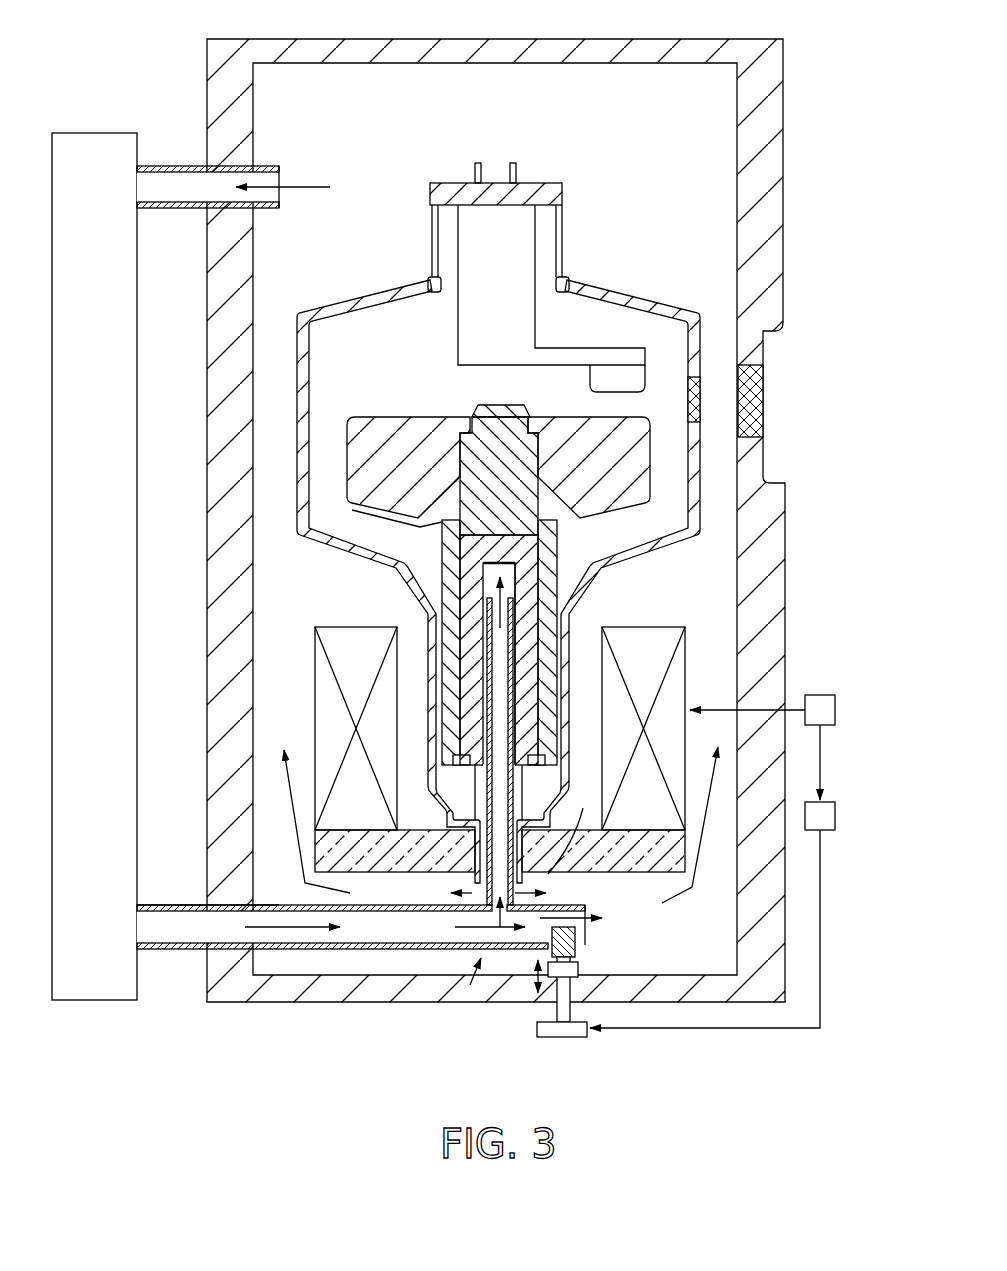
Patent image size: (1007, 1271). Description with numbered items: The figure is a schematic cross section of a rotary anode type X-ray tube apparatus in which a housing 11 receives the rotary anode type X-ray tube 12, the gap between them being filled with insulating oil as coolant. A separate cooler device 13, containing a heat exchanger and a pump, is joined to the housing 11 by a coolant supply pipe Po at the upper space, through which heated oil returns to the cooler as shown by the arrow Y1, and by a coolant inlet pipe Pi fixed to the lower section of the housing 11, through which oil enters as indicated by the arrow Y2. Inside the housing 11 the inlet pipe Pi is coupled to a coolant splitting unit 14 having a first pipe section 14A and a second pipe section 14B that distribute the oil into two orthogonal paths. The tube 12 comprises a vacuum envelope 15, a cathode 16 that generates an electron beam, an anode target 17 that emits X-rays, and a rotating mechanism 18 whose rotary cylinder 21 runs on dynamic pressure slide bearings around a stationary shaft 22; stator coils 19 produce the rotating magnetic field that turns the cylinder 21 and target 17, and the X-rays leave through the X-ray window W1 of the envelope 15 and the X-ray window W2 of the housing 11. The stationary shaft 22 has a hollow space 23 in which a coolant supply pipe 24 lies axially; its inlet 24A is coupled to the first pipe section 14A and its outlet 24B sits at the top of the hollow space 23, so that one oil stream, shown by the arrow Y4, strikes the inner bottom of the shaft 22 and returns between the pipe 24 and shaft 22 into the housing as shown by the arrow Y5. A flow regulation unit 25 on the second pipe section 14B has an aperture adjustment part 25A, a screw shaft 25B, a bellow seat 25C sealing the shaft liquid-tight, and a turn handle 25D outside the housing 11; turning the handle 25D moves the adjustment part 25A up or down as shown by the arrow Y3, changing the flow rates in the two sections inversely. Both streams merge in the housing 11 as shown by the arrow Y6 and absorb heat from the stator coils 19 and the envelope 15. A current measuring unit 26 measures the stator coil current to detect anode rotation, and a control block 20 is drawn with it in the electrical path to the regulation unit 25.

The housing 11 is at (456, 38).
The rotary anode type X-ray tube 12 is at (577, 190).
The cooler device 13 is at (92, 133).
The coolant splitting unit 14 is at (465, 950).
The first pipe section 14A is at (480, 945).
The second pipe section 14B is at (560, 905).
The vacuum envelope 15 is at (360, 288).
The cathode 16 is at (576, 348).
The anode target 17 is at (558, 428).
The rotating mechanism 18 is at (424, 540).
The stator coils 19 is at (678, 627).
The controller 20 is at (820, 695).
The rotary cylinder 21 is at (548, 525).
The stationary shaft 22 is at (520, 550).
The hollow space 23 is at (483, 575).
The coolant supply pipe 24 is at (489, 600).
The inlet 24A is at (485, 873).
The outlet 24B is at (515, 585).
The flow regulation unit 25 is at (600, 950).
The aperture adjustment part 25A is at (548, 970).
The screw shaft 25B is at (578, 1000).
The bellow seat 25C is at (590, 965).
The turn handle 25D is at (567, 1037).
The current measuring unit 26 is at (828, 830).
The coolant supply pipe Po is at (170, 166).
The coolant inlet pipe Pi is at (172, 949).
The X-ray window W1 is at (700, 385).
The X-ray window W2 is at (766, 400).
The arrow Y1 is at (318, 187).
The flow direction Y2 is at (297, 930).
The arrow Y3 is at (537, 995).
The arrow Y4 is at (495, 602).
The arrow Y5 is at (574, 829).
The arrow Y6 is at (298, 838).